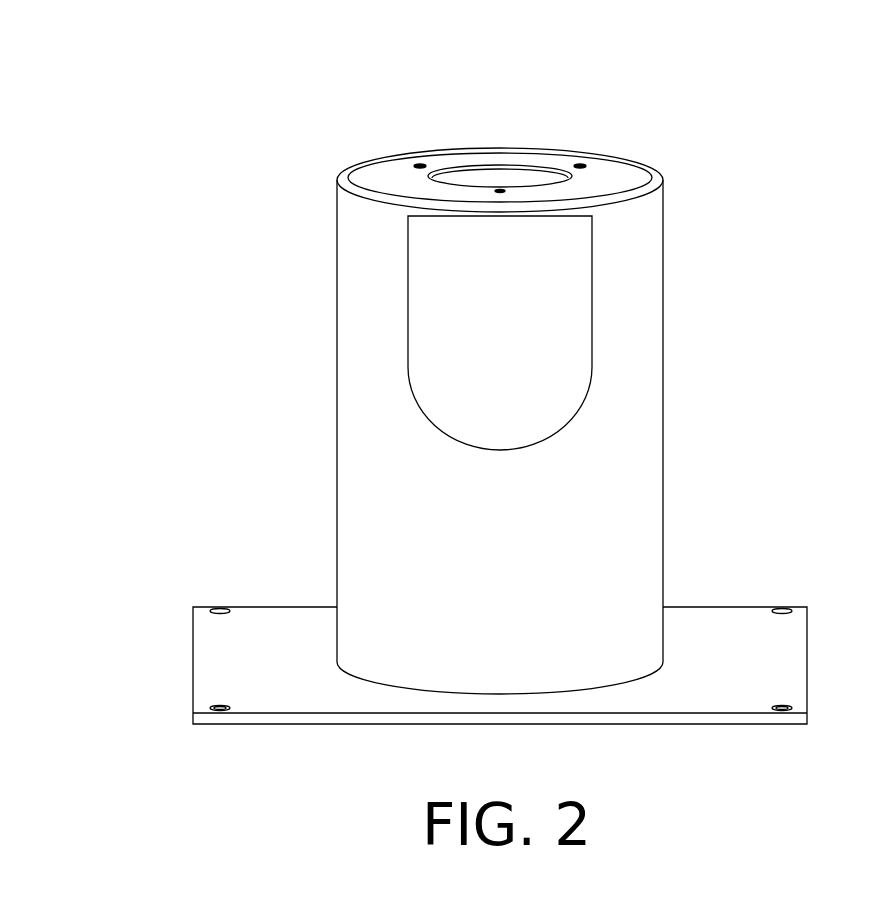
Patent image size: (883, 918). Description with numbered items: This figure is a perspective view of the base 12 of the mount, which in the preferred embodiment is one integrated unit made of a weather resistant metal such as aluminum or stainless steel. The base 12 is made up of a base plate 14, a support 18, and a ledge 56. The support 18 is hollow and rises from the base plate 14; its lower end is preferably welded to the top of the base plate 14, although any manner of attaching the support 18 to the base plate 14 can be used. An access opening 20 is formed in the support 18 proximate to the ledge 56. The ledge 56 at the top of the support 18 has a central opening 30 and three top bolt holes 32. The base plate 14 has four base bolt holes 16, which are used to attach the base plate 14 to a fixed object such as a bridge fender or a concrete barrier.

The base 12 is at (300, 227).
The base plate 14 is at (702, 637).
The base bolt holes 16 is at (217, 708).
The support 18 is at (377, 475).
The access opening 20 is at (503, 351).
The central opening 30 is at (500, 180).
The top bolt holes 32 is at (585, 165).
The ledge 56 is at (520, 150).